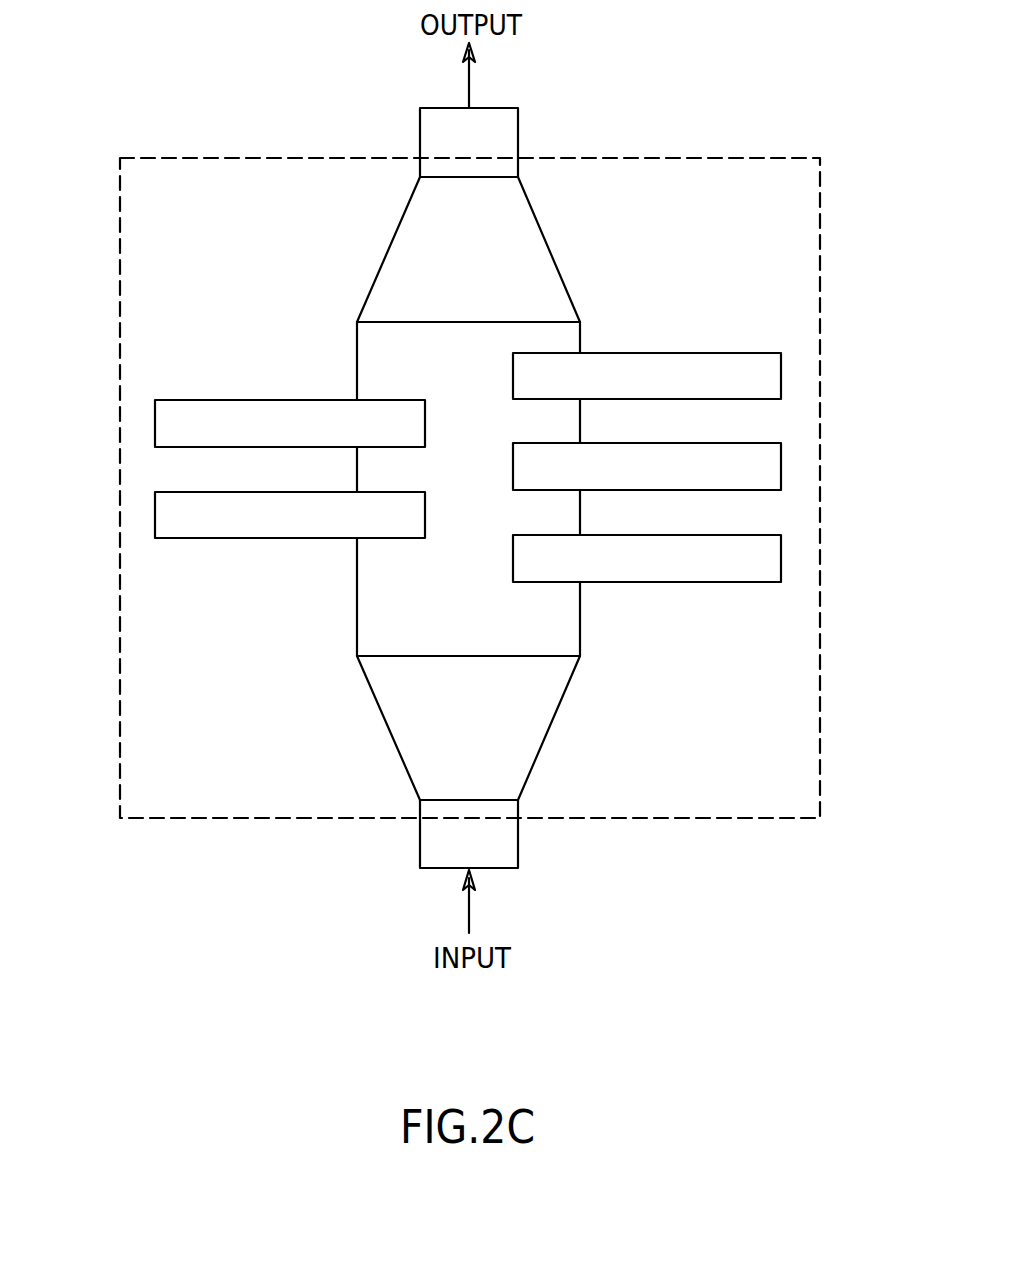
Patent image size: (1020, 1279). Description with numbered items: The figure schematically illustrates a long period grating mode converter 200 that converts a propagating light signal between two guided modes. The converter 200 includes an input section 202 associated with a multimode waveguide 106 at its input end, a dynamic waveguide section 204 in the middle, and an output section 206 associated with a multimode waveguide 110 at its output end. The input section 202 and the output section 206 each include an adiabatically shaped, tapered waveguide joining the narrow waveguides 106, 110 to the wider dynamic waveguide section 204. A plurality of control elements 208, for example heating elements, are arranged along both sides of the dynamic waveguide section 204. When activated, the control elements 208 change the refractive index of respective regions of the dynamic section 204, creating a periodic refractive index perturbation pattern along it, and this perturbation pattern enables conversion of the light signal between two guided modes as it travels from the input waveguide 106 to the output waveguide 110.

The LPG mode converter 200 is at (120, 758).
The MM waveguide 110 is at (420, 127).
The MM waveguide 106 is at (420, 838).
The input section 202 is at (520, 723).
The dynamic waveguide section 204 is at (375, 612).
The output section 206 is at (395, 275).
The control elements 208 is at (155, 423).